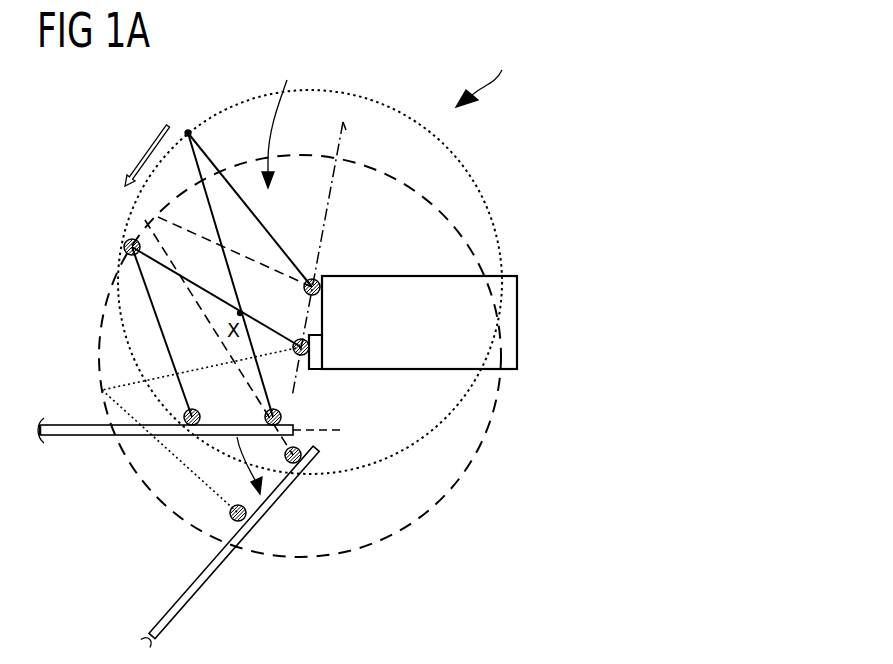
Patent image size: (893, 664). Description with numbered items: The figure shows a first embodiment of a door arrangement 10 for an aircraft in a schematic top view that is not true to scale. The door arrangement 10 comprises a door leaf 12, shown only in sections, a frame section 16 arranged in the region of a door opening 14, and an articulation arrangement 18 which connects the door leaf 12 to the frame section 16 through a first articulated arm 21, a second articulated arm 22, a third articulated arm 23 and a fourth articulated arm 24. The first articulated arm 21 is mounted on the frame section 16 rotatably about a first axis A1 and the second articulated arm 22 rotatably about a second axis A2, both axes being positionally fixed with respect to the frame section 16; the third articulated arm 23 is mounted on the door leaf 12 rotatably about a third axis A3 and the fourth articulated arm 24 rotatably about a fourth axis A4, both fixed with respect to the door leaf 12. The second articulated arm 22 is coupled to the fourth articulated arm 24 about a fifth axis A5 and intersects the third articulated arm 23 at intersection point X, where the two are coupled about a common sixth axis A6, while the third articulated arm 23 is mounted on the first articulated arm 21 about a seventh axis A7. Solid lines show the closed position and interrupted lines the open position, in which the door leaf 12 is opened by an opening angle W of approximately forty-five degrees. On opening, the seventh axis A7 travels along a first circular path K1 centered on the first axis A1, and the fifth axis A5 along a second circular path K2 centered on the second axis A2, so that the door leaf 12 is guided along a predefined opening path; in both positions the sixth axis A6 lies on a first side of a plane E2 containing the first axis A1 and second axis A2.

The door arrangement 10 is at (488, 75).
The door leaf 12 is at (84, 438).
The door opening 14 is at (322, 315).
The frame section 16 is at (514, 275).
The articulation arrangement 18 is at (281, 120).
The first articulated arm 21 is at (190, 147).
The second articulated arm 22 is at (128, 243).
The third articulated arm 23 is at (186, 132).
The fourth articulated arm 24 is at (157, 313).
The first circular path K1 is at (312, 90).
The second circular path K2 is at (317, 557).
The plane E2 is at (343, 133).
The first axis A1 is at (315, 282).
The second axis A2 is at (305, 352).
The third axis A3 is at (265, 417).
The fourth axis A4 is at (185, 416).
The fifth axis A5 is at (126, 248).
The sixth axis A6 is at (238, 313).
The seventh axis A7 is at (189, 130).
The opening angle W is at (255, 473).